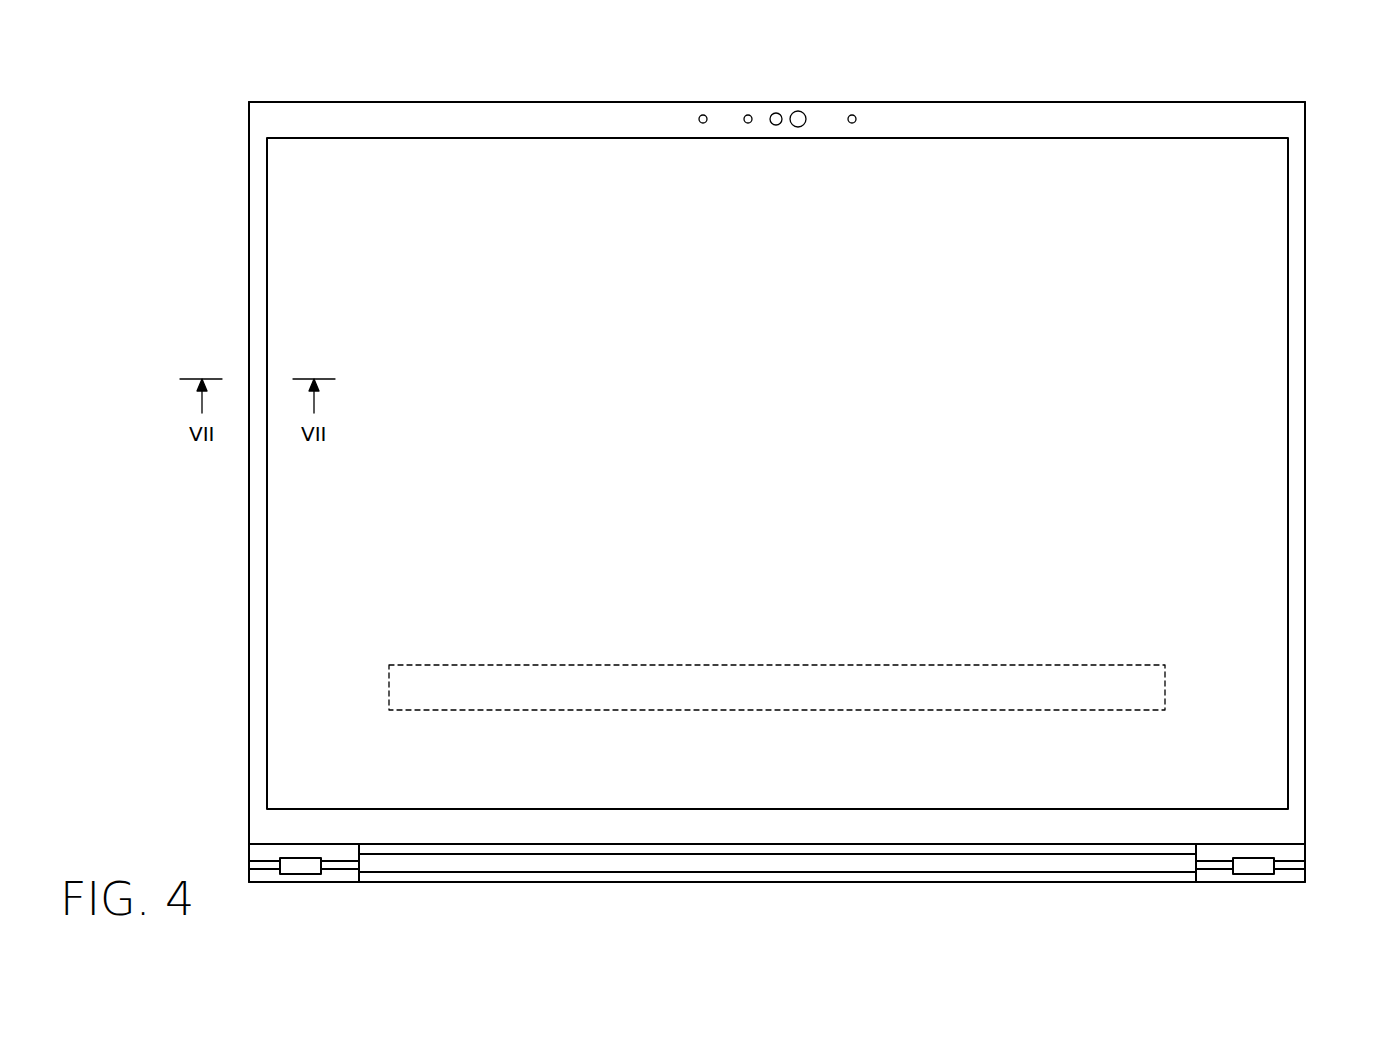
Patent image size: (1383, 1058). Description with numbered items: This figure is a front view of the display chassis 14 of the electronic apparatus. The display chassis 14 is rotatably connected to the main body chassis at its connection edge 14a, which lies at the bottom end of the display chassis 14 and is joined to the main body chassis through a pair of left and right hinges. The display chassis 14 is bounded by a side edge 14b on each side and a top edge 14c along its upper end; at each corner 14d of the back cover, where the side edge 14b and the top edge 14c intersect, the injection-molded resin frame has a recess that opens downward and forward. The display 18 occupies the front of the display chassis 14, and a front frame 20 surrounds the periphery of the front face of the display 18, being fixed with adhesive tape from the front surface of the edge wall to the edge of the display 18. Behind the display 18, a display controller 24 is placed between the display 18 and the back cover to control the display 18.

The display chassis 14 is at (1128, 72).
The connection edge 14a is at (780, 884).
The side edge 14b is at (249, 556).
The top edge 14c is at (774, 101).
The corner 14d is at (252, 101).
The display 18 is at (614, 195).
The front frame 20 is at (1296, 395).
The display controller 24 is at (1072, 665).